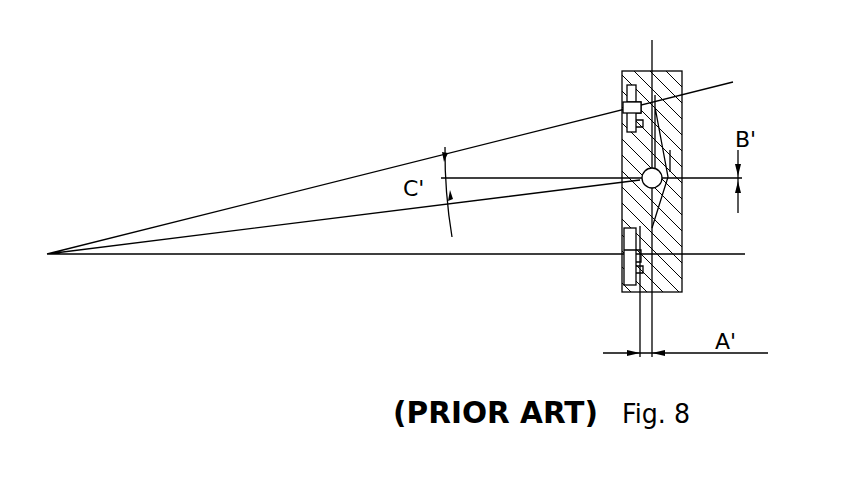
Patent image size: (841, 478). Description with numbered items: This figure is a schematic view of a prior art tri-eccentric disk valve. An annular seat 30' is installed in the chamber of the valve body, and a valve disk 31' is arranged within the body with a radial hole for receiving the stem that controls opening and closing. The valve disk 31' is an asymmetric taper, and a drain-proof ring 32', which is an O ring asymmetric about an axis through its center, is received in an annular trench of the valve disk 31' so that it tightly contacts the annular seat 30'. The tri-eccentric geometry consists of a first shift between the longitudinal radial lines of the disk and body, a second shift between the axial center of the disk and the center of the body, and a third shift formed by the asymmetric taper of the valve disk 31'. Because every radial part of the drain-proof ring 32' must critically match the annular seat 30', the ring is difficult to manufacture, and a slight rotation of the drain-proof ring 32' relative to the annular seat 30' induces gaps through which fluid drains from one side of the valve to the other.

The annular seat 30' is at (604, 192).
The valve disk 31' is at (690, 166).
The drain-proof ring 32' is at (615, 120).